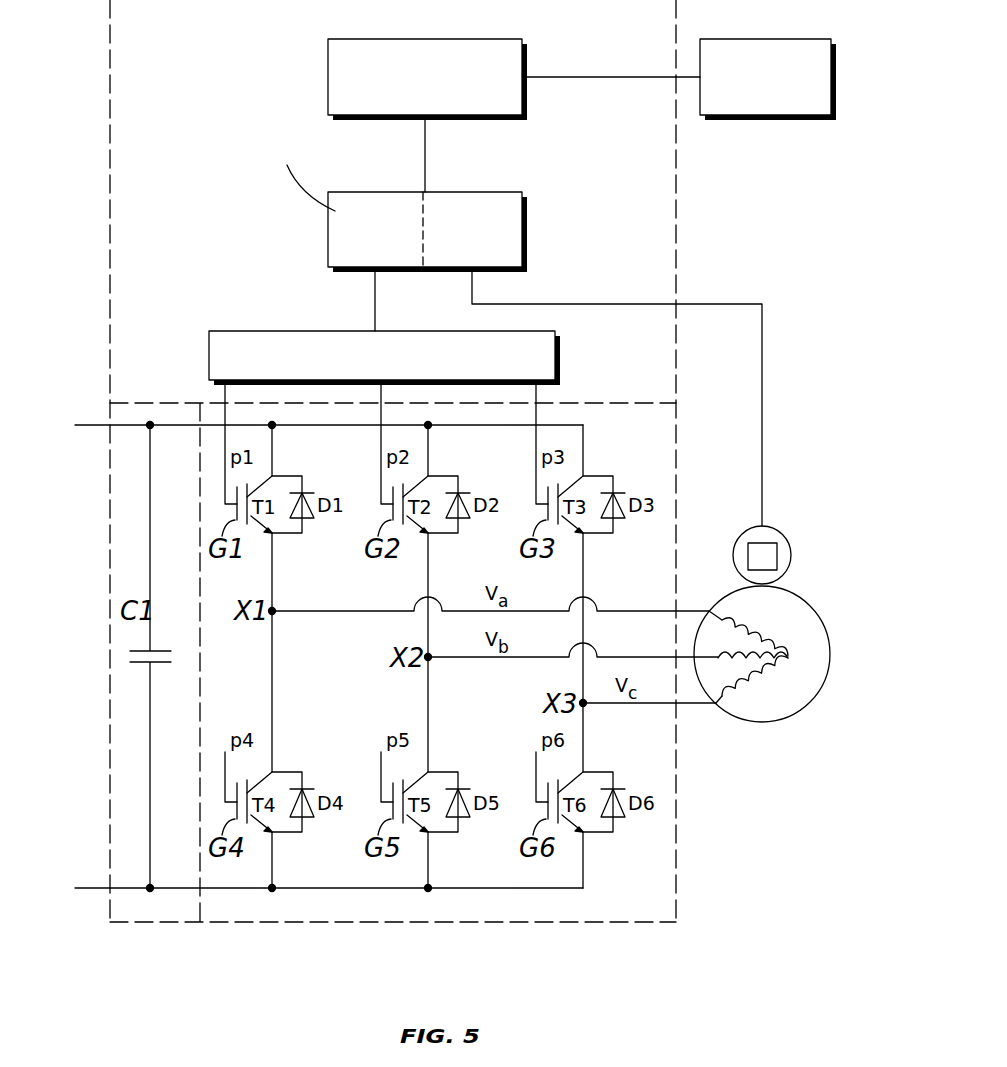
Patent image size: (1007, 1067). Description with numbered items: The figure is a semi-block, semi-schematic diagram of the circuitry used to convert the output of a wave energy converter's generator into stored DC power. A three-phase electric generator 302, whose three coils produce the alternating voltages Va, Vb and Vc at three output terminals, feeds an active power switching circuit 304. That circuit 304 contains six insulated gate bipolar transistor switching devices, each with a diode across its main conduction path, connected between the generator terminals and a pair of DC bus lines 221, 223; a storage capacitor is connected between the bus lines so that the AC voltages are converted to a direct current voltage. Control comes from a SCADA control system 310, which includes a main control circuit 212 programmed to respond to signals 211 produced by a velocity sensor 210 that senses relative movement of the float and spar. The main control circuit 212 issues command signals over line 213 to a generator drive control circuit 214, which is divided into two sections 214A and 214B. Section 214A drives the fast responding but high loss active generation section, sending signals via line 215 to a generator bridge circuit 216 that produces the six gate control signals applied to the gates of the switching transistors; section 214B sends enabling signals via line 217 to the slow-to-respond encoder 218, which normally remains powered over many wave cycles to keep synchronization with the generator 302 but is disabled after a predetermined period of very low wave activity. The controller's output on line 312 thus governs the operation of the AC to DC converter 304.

The velocity sensor 210 is at (818, 38).
The signals 211 is at (574, 77).
The main control circuit 212 is at (328, 62).
The line(s) 213 is at (425, 153).
The generator drive control circuit 214 is at (404, 197).
The section 214A of generator drive control circuit 214A is at (330, 243).
The section 214B of generator drive control circuit 214B is at (512, 215).
The line(s) 215 is at (372, 300).
The generator bridge circuit 216 is at (560, 353).
The line(s) 217 is at (538, 304).
The encoder 218 is at (780, 535).
The DC bus line 221 is at (93, 424).
The DC bus line 223 is at (95, 888).
The electric generator 302 is at (785, 718).
The active power switching circuit 304 is at (323, 908).
The SCADA control system 310 is at (690, 185).
The line 312 is at (225, 465).